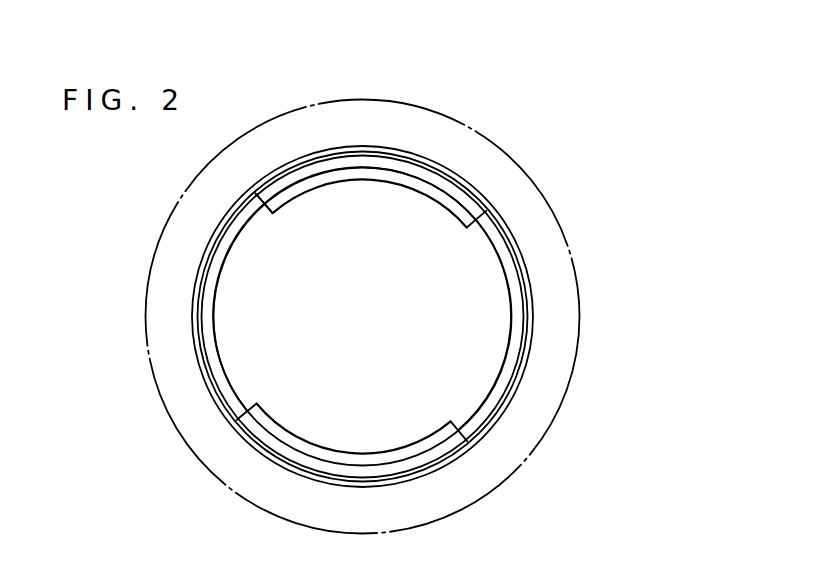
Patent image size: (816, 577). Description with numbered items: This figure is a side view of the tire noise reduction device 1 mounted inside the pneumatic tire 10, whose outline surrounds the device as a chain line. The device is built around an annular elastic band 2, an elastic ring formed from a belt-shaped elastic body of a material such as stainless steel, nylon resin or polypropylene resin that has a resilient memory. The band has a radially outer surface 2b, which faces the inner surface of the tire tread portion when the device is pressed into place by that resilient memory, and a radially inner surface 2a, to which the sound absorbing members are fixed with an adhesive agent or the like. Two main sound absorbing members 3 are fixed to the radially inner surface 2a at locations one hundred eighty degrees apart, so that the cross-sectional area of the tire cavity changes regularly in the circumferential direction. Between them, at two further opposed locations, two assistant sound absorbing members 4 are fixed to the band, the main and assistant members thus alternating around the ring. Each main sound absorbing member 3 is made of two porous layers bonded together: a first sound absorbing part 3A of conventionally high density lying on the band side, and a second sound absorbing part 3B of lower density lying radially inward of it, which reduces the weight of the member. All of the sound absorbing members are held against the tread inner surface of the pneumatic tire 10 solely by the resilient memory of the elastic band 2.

The tire noise reduction device 1 is at (452, 164).
The elastic band 2 is at (446, 316).
The radially inner surface of the elastic band 2a is at (522, 300).
The radially outer surface of the elastic band 2b is at (518, 369).
The main sound absorbing member 3 is at (363, 184).
The first sound absorbing part 3A is at (381, 165).
The second sound absorbing part 3B is at (299, 191).
The assistant sound absorbing member 4 is at (218, 340).
The pneumatic tire 10 is at (562, 229).